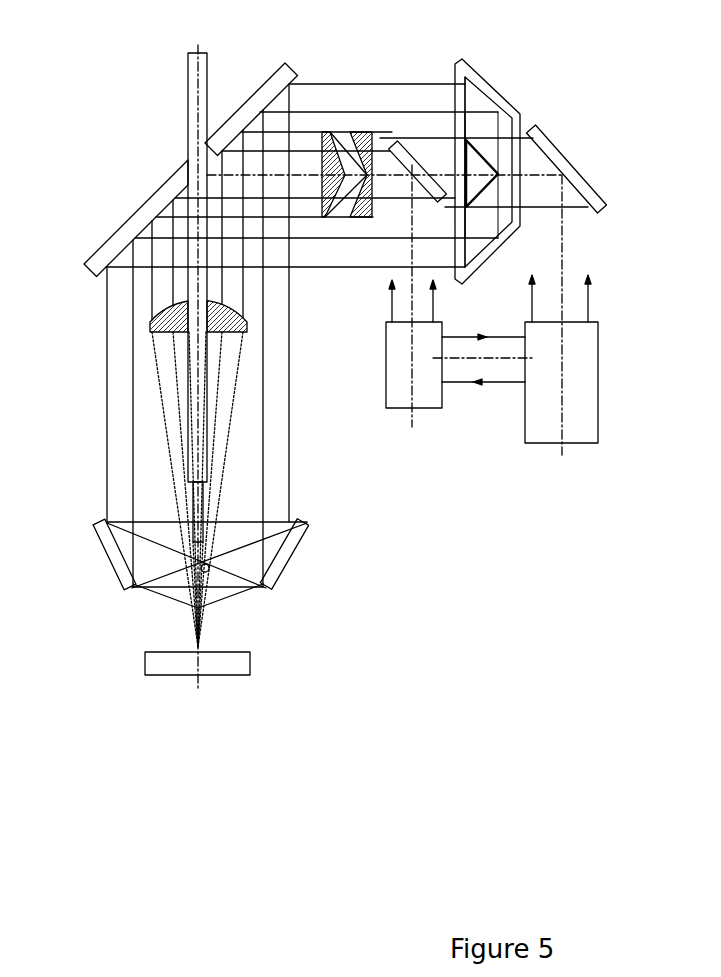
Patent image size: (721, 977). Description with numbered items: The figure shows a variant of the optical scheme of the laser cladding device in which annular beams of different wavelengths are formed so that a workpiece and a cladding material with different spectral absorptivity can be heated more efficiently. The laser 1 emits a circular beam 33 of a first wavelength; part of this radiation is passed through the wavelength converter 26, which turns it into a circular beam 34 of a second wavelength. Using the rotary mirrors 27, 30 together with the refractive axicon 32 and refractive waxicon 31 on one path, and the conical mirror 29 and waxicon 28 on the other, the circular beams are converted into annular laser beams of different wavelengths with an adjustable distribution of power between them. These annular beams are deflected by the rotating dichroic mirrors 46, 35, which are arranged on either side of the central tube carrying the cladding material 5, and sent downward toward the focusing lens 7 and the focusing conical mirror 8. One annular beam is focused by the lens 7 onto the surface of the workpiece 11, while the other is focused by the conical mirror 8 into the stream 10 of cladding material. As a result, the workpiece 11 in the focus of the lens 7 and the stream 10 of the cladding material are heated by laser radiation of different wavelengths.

The laser 1 is at (568, 438).
The cladding material 5 is at (190, 97).
The focusing lens 7 is at (150, 327).
The focusing conical mirror 8 is at (113, 550).
The cladding material stream 10 is at (210, 568).
The workpiece 11 is at (155, 662).
The wavelength converter 26 is at (427, 403).
The rotary mirror 27 is at (562, 153).
The waxicon 28 is at (498, 100).
The conical mirror 29 is at (457, 130).
The rotary mirror 30 is at (400, 145).
The refractive waxicon 31 is at (362, 132).
The refractive axicon 32 is at (327, 132).
The circular beam 33 is at (508, 352).
The circular beam 34 is at (403, 302).
The dichroic mirror 35 is at (270, 90).
The dichroic mirror 46 is at (157, 197).